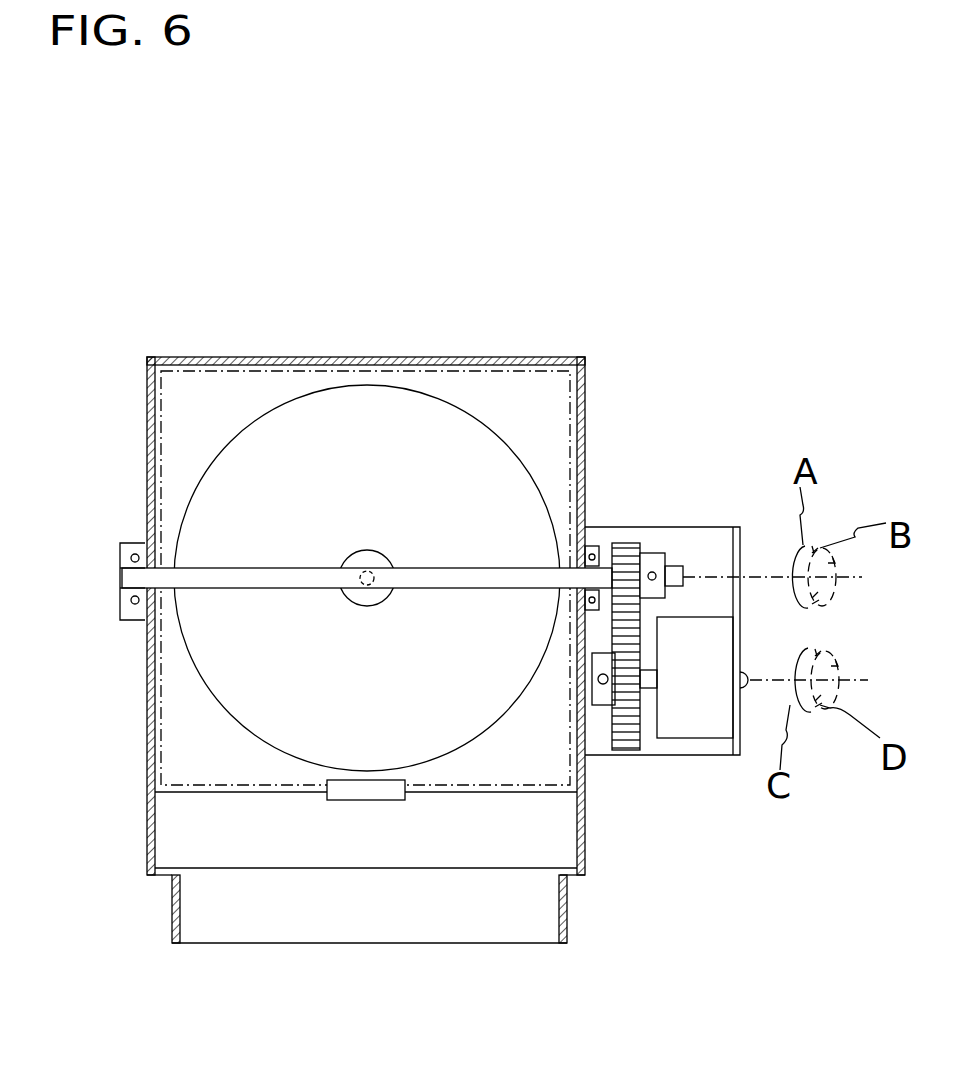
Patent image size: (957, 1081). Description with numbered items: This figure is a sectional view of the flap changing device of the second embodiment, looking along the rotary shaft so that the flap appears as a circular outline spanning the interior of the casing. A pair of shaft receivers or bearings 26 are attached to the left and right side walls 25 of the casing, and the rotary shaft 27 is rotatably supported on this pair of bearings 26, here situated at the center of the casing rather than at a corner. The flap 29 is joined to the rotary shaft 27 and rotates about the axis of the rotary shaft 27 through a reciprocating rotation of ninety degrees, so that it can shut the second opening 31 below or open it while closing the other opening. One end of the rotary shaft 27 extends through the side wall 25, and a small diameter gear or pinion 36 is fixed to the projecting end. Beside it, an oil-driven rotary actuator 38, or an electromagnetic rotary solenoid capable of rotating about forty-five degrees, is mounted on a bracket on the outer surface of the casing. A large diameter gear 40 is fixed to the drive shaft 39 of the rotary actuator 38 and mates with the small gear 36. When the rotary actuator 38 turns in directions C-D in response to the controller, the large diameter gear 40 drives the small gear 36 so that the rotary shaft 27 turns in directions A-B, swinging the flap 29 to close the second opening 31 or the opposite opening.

The side wall 25 is at (147, 462).
The bearing 26 is at (128, 546).
The rotary shaft 27 is at (400, 580).
The flap 29 is at (198, 412).
The second opening 31 is at (248, 927).
The small diameter gear 36 is at (630, 545).
The rotary actuator 38 is at (697, 727).
The drive shaft 39 is at (648, 688).
The large diameter gear 40 is at (626, 757).